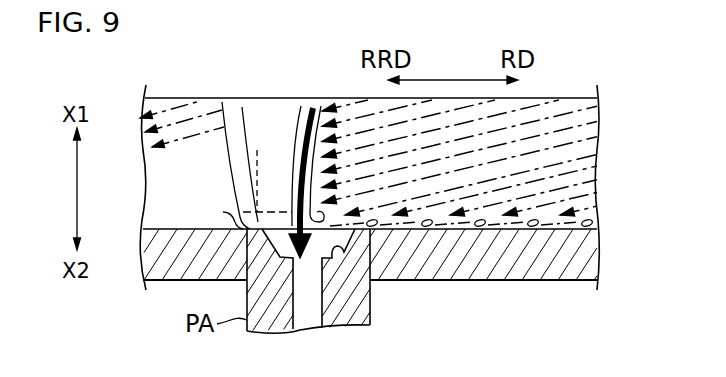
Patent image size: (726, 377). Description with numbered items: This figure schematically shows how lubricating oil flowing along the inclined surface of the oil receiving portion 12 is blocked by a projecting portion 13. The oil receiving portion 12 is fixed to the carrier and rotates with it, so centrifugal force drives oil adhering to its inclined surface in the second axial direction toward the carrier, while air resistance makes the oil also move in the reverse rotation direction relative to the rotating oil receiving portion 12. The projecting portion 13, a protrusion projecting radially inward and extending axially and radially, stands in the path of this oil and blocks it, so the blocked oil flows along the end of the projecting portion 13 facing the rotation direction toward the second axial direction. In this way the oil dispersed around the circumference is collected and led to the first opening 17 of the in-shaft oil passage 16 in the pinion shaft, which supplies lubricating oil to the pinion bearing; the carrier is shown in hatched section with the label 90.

The oil receiving portion 12 is at (167, 101).
The projecting portion 13 is at (268, 186).
The in-shaft oil passage 16 is at (300, 302).
The first opening 17 is at (363, 287).
The mold (cavity CA) 90 is at (470, 272).